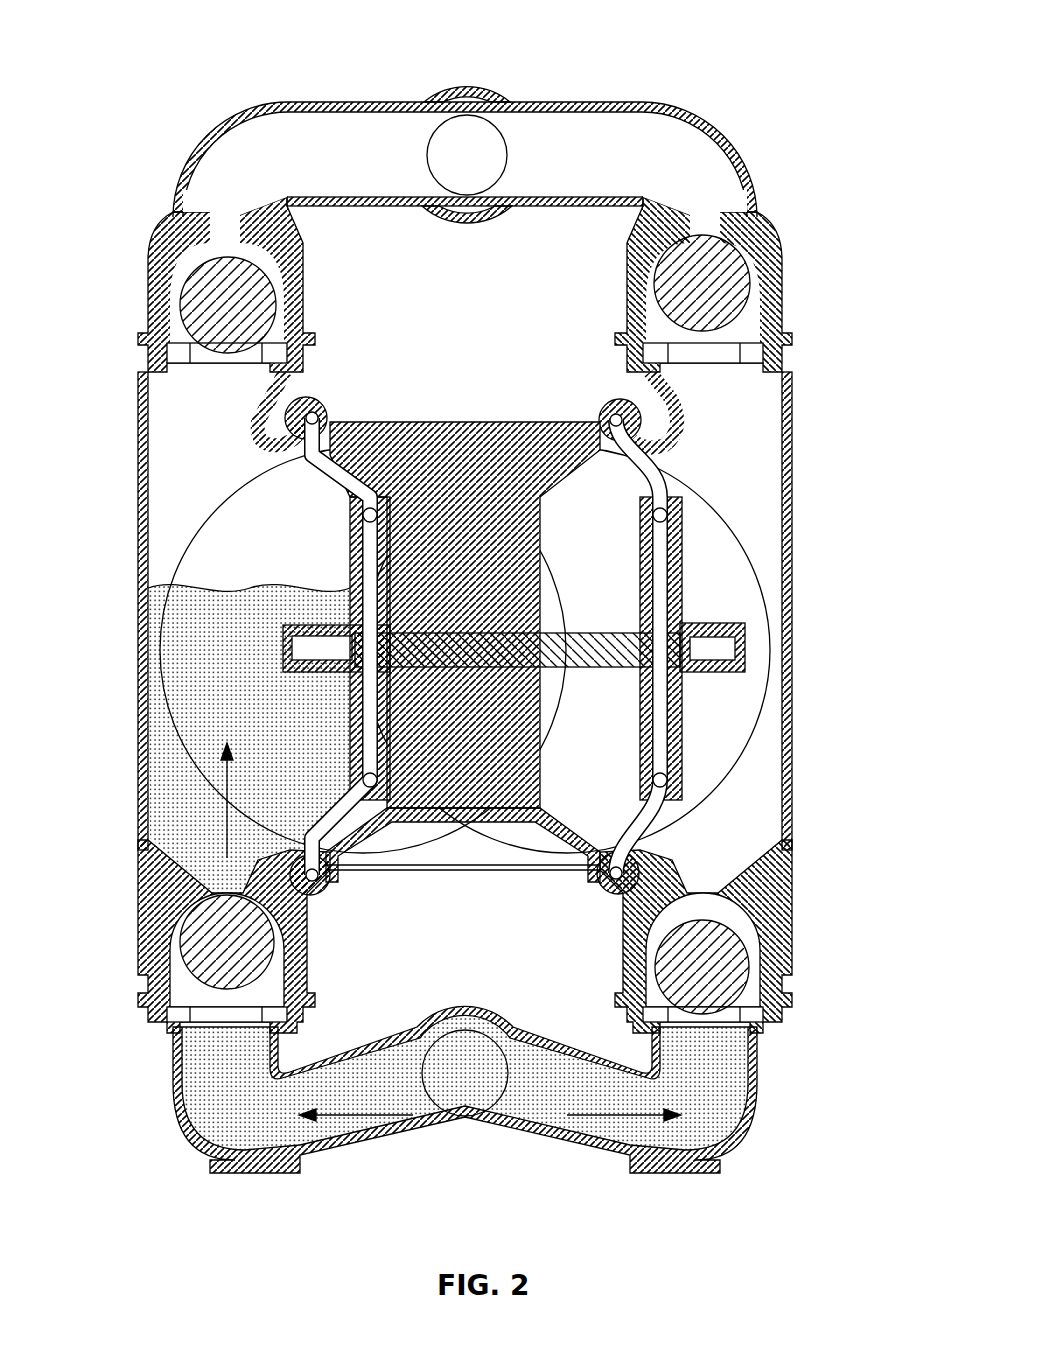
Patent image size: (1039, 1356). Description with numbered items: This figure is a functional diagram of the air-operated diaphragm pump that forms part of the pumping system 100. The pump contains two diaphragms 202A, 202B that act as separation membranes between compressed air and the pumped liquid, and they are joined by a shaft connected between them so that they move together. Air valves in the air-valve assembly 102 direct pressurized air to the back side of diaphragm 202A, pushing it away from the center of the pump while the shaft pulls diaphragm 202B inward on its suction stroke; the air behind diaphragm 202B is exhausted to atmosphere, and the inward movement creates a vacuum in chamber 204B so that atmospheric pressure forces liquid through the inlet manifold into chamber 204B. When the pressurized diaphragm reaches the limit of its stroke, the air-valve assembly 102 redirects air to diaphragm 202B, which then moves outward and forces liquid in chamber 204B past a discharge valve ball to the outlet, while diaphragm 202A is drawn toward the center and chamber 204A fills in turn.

The air-operated diaphragm pumping system 100 is at (481, 592).
The air-valve assembly 102 is at (488, 422).
The diaphragm 202A is at (683, 723).
The diaphragm 202B is at (350, 728).
The chamber 204A is at (743, 503).
The chamber 204B is at (262, 552).